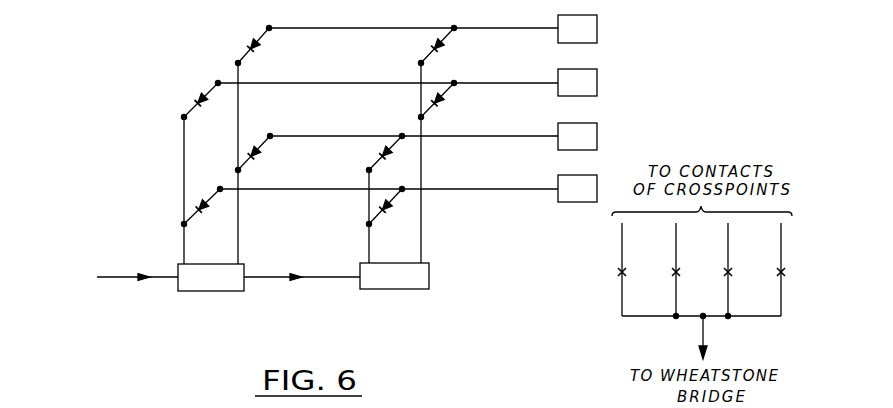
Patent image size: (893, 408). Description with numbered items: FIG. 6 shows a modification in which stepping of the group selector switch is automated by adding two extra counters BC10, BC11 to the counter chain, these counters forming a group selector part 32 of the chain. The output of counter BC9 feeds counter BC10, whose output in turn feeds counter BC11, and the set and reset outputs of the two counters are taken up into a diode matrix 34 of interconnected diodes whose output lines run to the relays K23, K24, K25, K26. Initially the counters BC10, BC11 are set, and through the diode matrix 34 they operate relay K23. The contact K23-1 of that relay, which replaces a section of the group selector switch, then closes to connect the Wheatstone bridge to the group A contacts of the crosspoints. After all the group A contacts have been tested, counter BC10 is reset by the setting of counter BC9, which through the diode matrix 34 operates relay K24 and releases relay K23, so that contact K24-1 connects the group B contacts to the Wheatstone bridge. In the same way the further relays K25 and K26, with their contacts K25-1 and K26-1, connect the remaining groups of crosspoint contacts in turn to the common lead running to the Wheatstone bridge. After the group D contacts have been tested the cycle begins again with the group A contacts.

The diode matrix 34 is at (334, 64).
The group selector part 32 is at (284, 294).
The relay K23 is at (577, 29).
The relay K24 is at (577, 82).
The relay K25 is at (577, 136).
The relay K26 is at (577, 188).
The counter BC10 is at (210, 268).
The counter BC11 is at (393, 266).
The counter BC9 is at (110, 271).
The contact K23-1 is at (600, 269).
The contact K24-1 is at (657, 269).
The contact K25-1 is at (709, 269).
The contact K26-1 is at (761, 269).